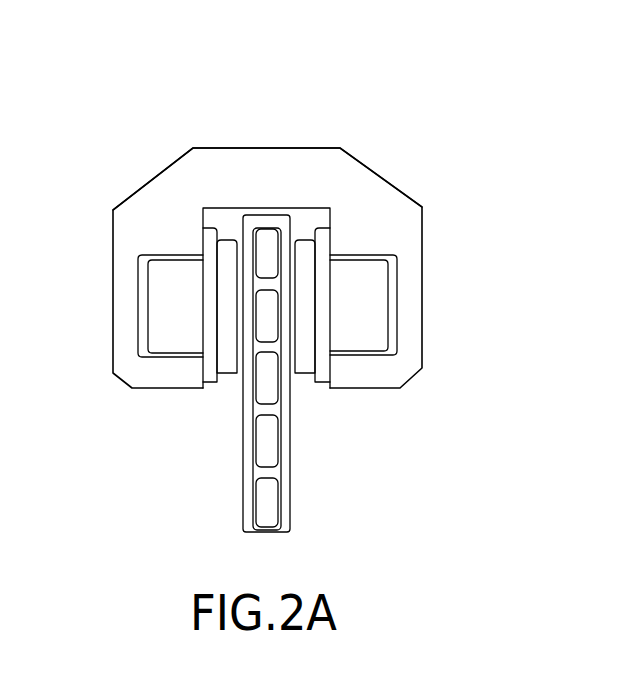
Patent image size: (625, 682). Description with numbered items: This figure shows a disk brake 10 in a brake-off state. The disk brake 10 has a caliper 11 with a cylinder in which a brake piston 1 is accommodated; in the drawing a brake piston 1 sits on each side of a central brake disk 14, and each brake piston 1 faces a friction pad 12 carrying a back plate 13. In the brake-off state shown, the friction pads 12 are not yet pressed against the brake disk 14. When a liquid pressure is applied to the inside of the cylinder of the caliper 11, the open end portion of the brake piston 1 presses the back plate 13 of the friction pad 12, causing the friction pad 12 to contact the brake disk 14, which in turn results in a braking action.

The disk brake 10 is at (328, 102).
The caliper 11 is at (360, 187).
The brake piston 1 is at (178, 300).
The friction pad 12 is at (227, 365).
The back plate 13 is at (210, 383).
The brake disk 14 is at (278, 513).